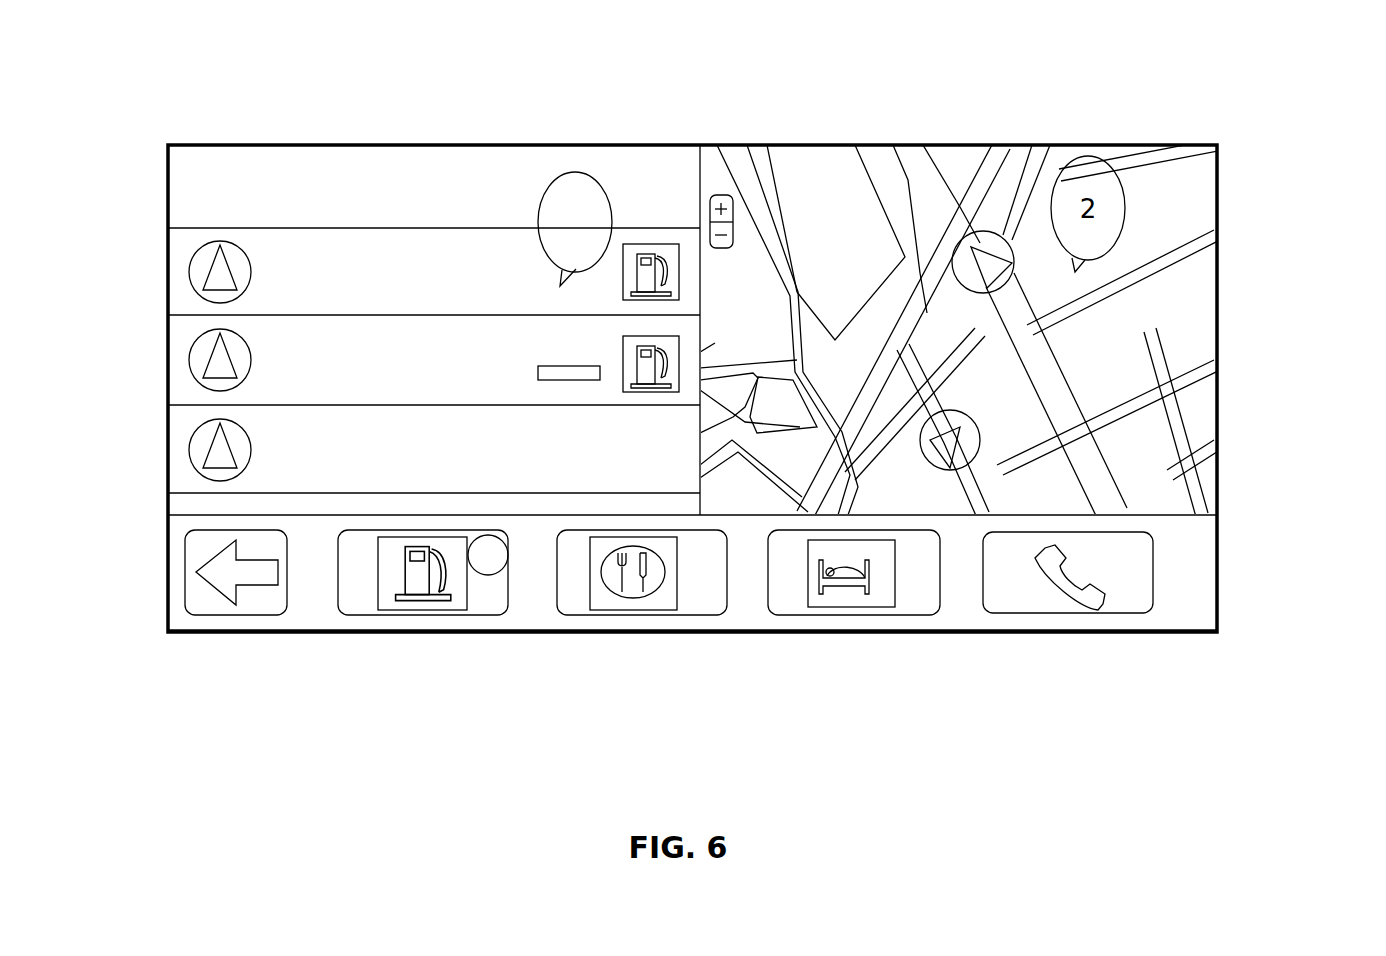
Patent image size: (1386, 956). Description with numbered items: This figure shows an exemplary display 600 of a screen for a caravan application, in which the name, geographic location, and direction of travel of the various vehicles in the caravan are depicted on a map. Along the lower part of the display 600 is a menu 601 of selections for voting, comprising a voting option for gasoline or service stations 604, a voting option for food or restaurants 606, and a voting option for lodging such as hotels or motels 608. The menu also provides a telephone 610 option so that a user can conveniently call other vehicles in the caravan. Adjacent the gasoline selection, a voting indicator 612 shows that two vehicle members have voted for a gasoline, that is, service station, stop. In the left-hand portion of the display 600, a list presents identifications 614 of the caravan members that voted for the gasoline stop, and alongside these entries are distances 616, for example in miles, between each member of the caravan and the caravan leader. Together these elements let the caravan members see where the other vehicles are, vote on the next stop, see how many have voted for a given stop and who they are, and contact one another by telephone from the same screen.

The display 600 is at (364, 102).
The menu 601 is at (286, 660).
The gasoline voting option 604 is at (360, 598).
The food voting option 606 is at (577, 598).
The lodging voting option 608 is at (790, 598).
The telephone menu option 610 is at (1128, 598).
The voting indicator 612 is at (490, 577).
The identifications 614 is at (690, 243).
The distances 616 is at (558, 381).